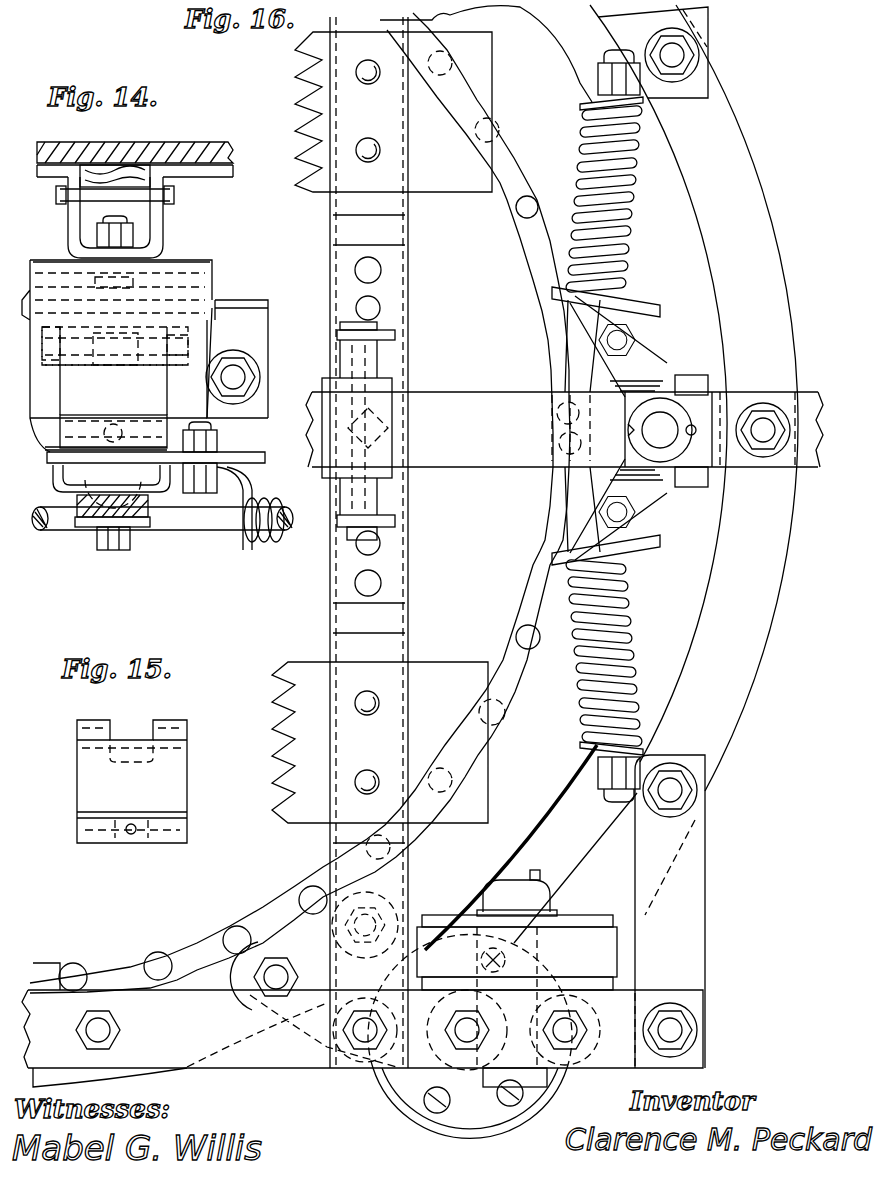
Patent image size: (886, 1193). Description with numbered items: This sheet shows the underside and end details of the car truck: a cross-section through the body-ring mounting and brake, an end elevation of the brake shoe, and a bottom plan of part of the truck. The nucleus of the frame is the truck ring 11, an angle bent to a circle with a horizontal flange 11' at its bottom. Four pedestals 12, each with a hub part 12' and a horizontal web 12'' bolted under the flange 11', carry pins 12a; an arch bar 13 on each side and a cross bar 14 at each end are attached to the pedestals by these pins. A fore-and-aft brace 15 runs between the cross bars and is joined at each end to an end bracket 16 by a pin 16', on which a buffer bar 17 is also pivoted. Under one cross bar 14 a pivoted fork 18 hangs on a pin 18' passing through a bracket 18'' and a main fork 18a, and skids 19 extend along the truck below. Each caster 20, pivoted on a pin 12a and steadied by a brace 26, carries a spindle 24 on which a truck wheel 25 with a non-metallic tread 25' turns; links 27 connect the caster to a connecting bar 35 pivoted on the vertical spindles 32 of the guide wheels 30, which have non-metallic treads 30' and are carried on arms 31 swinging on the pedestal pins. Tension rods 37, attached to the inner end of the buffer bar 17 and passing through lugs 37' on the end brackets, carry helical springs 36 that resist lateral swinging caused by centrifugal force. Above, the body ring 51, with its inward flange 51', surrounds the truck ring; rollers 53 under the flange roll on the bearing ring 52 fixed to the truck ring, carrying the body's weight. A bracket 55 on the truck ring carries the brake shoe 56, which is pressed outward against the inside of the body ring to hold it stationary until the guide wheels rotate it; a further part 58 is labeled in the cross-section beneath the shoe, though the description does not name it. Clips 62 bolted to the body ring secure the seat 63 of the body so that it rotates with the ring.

In FIG. 14, the truck ring 11 is at (253, 369).
In FIG. 16, the truck ring 11 is at (495, 200).
In FIG. 14, the horizontal flange of the truck ring 11' is at (176, 430).
In FIG. 16, the horizontal flange of the truck ring 11' is at (110, 1084).
In FIG. 16, the pedestal 12 is at (365, 1059).
In FIG. 16, the hub part 12' is at (323, 1096).
In FIG. 16, the horizontal web 12'' is at (314, 951).
In FIG. 16, the pin 12a is at (367, 1040).
In FIG. 16, the arch bar 13 is at (362, 1029).
In FIG. 16, the cross bar 14 is at (408, 205).
In FIG. 14, the fore-and-aft brace 15 is at (143, 517).
In FIG. 16, the fore-and-aft brace 15 is at (564, 429).
In FIG. 14, the end bracket 16 is at (133, 503).
In FIG. 16, the end bracket 16 is at (641, 428).
In FIG. 14, the pin 16' is at (105, 569).
In FIG. 16, the pin 16' is at (670, 388).
In FIG. 14, the buffer bar 17 is at (93, 517).
In FIG. 16, the buffer bar 17 is at (760, 465).
In FIG. 16, the pivoted fork 18 is at (396, 427).
In FIG. 16, the pin 18' is at (395, 425).
In FIG. 16, the bracket 18'' is at (409, 336).
In FIG. 16, the main fork 18a is at (390, 613).
In FIG. 16, the skid 19 is at (382, 427).
In FIG. 16, the caster 20 is at (656, 1030).
In FIG. 16, the spindle 24 is at (512, 868).
In FIG. 16, the truck wheel 25 is at (517, 969).
In FIG. 16, the non-metallic tread 25' is at (541, 953).
In FIG. 16, the brace 26 is at (597, 1067).
In FIG. 16, the link 27 is at (705, 30).
In FIG. 16, the guide wheel 30 is at (470, 1031).
In FIG. 16, the non-metallic tread 30' is at (470, 1124).
In FIG. 16, the arm 31 is at (330, 1017).
In FIG. 16, the spindle 32 is at (455, 1040).
In FIG. 16, the connecting bar 35 is at (694, 398).
In FIG. 14, the helical spring 36 is at (270, 543).
In FIG. 16, the helical spring 36 is at (625, 190).
In FIG. 14, the tension rod 37 is at (158, 566).
In FIG. 16, the tension rod 37 is at (520, 474).
In FIG. 14, the lug 37' is at (231, 534).
In FIG. 16, the lug 37' is at (619, 458).
In FIG. 14, the body ring 51 is at (143, 356).
In FIG. 16, the body ring 51 is at (291, 510).
In FIG. 14, the flange of the body ring 51' is at (134, 244).
In FIG. 16, the flange of the body ring 51' is at (300, 503).
In FIG. 14, the bearing ring 52 is at (247, 307).
In FIG. 16, the bearing ring 52 is at (536, 200).
In FIG. 16, the roller 53 is at (535, 233).
In FIG. 14, the bracket 55 is at (100, 347).
In FIG. 14, the shoe 56 is at (80, 420).
In FIG. 15, the shoe 56 is at (132, 781).
In FIG. 16, the shoe 56 is at (703, 487).
In FIG. 14, the plate 58 is at (80, 450).
In FIG. 14, the clip 62 is at (157, 230).
In FIG. 14, the seat 63 is at (167, 142).